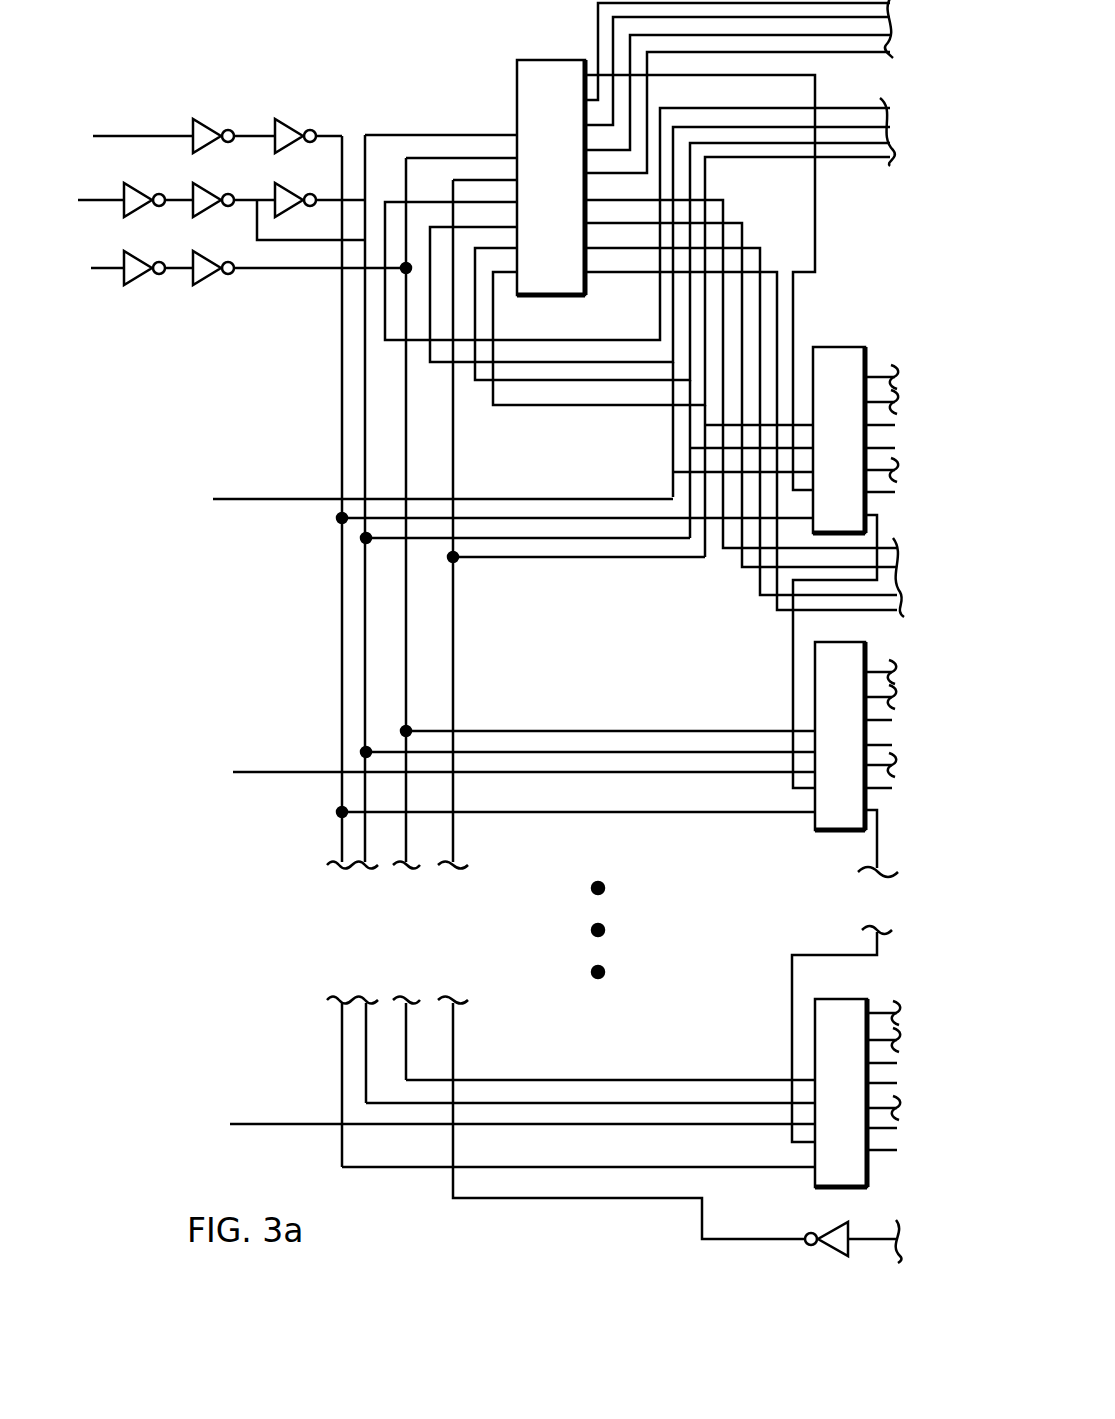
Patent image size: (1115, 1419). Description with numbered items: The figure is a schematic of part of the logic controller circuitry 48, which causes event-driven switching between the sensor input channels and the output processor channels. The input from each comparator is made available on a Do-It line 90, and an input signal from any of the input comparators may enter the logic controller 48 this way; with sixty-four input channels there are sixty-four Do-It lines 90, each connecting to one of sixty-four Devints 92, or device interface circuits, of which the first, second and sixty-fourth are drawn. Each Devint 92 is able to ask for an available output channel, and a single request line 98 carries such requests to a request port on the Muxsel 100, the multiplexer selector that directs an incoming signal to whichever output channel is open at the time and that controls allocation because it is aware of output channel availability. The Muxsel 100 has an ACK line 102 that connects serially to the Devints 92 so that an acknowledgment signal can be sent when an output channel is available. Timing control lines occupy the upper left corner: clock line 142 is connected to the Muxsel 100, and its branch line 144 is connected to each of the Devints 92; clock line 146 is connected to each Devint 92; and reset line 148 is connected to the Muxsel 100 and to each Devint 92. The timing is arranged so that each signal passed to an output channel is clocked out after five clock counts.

The logic controller circuitry 48 is at (303, 602).
The Do-It line 90 is at (230, 501).
The Devint (device interface circuit) 92 is at (866, 365).
The request line 98 is at (445, 223).
The Muxsel (multiplexer selector) 100 is at (502, 95).
The ACK line 102 is at (815, 186).
The clock line 142 is at (105, 197).
The branch line 144 is at (257, 268).
The clock line 146 is at (159, 135).
The reset line 148 is at (105, 270).